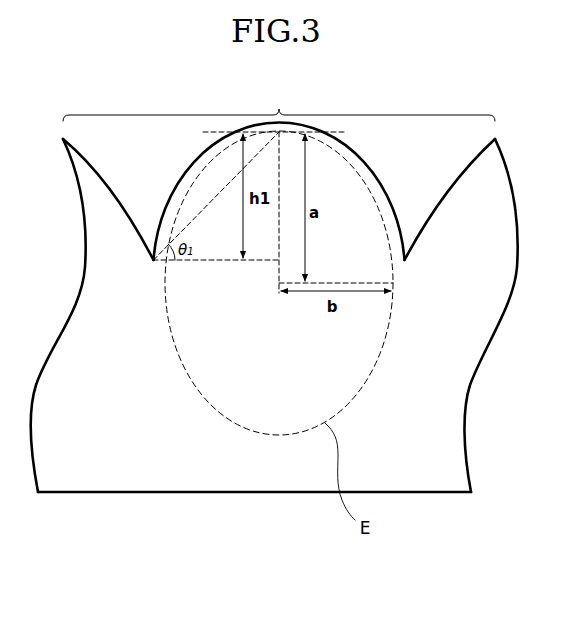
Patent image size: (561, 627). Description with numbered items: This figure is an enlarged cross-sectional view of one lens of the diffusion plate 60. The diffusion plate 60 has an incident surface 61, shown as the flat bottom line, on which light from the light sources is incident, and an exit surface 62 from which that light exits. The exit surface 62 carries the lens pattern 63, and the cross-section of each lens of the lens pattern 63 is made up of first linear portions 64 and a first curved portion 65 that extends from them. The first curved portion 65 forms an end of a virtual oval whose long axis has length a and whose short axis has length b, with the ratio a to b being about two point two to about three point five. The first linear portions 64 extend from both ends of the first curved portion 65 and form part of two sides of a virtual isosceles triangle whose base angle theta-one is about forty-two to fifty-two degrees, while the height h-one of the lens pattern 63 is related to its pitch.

The diffusion plate 60 is at (274, 342).
The incident surface 61 is at (92, 493).
The exit surface 62 is at (279, 173).
The lens pattern 63 is at (325, 191).
The first linear portions 64 is at (395, 226).
The first curved portion 65 is at (375, 198).